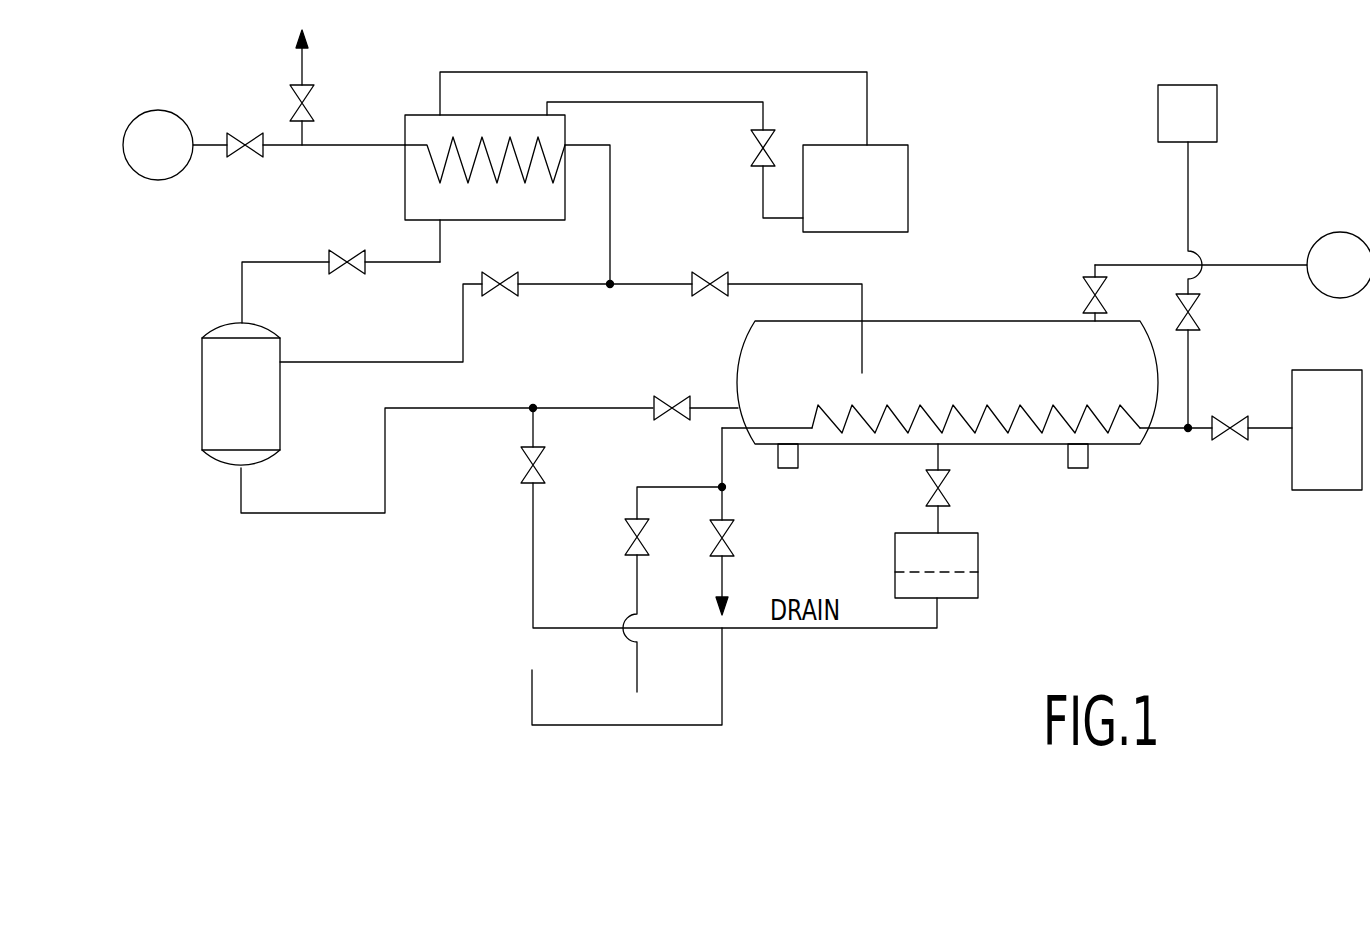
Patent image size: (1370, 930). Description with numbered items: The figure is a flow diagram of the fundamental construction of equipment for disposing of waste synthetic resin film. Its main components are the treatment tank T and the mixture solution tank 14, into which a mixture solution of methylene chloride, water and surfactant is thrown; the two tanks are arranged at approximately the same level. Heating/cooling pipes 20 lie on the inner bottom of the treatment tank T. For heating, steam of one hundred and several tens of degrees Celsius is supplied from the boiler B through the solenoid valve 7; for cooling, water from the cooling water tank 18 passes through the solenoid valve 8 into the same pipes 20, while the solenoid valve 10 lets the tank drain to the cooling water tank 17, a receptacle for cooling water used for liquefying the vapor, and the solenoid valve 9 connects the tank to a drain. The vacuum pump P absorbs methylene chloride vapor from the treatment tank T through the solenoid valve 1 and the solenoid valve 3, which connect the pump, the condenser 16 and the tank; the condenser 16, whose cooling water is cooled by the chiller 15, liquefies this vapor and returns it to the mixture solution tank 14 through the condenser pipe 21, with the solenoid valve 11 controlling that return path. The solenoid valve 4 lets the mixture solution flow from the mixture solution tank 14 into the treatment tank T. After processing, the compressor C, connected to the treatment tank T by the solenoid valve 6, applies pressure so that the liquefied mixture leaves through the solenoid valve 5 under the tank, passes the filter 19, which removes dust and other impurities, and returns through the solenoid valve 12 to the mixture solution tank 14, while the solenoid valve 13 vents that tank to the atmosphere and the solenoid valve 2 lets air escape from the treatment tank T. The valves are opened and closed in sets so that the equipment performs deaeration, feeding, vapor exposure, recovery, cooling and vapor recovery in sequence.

The solenoid valve 1 is at (245, 134).
The solenoid valve 2 is at (314, 103).
The solenoid valve 3 is at (710, 272).
The solenoid valve 4 is at (672, 396).
The solenoid valve 5 is at (950, 488).
The solenoid valve 6 is at (1083, 295).
The solenoid valve 7 is at (1230, 440).
The solenoid valve 8 is at (1200, 312).
The solenoid valve 9 is at (734, 538).
The solenoid valve 10 is at (625, 537).
The solenoid valve 11 is at (347, 250).
The solenoid valve 12 is at (545, 465).
The solenoid valve 13 is at (500, 296).
The mixture solution tank 14 is at (215, 388).
The chiller 15 is at (845, 170).
The condenser 16 is at (414, 115).
The cooling water tank 17 is at (532, 688).
The cooling water tank 18 is at (1176, 102).
The filter 19 is at (965, 553).
The heating/cooling pipes 20 is at (1015, 410).
The condenser pipe 21 is at (500, 175).
The treatment tank T is at (978, 318).
The vacuum pump P is at (158, 145).
The boiler B is at (1313, 405).
The compressor C is at (1326, 244).